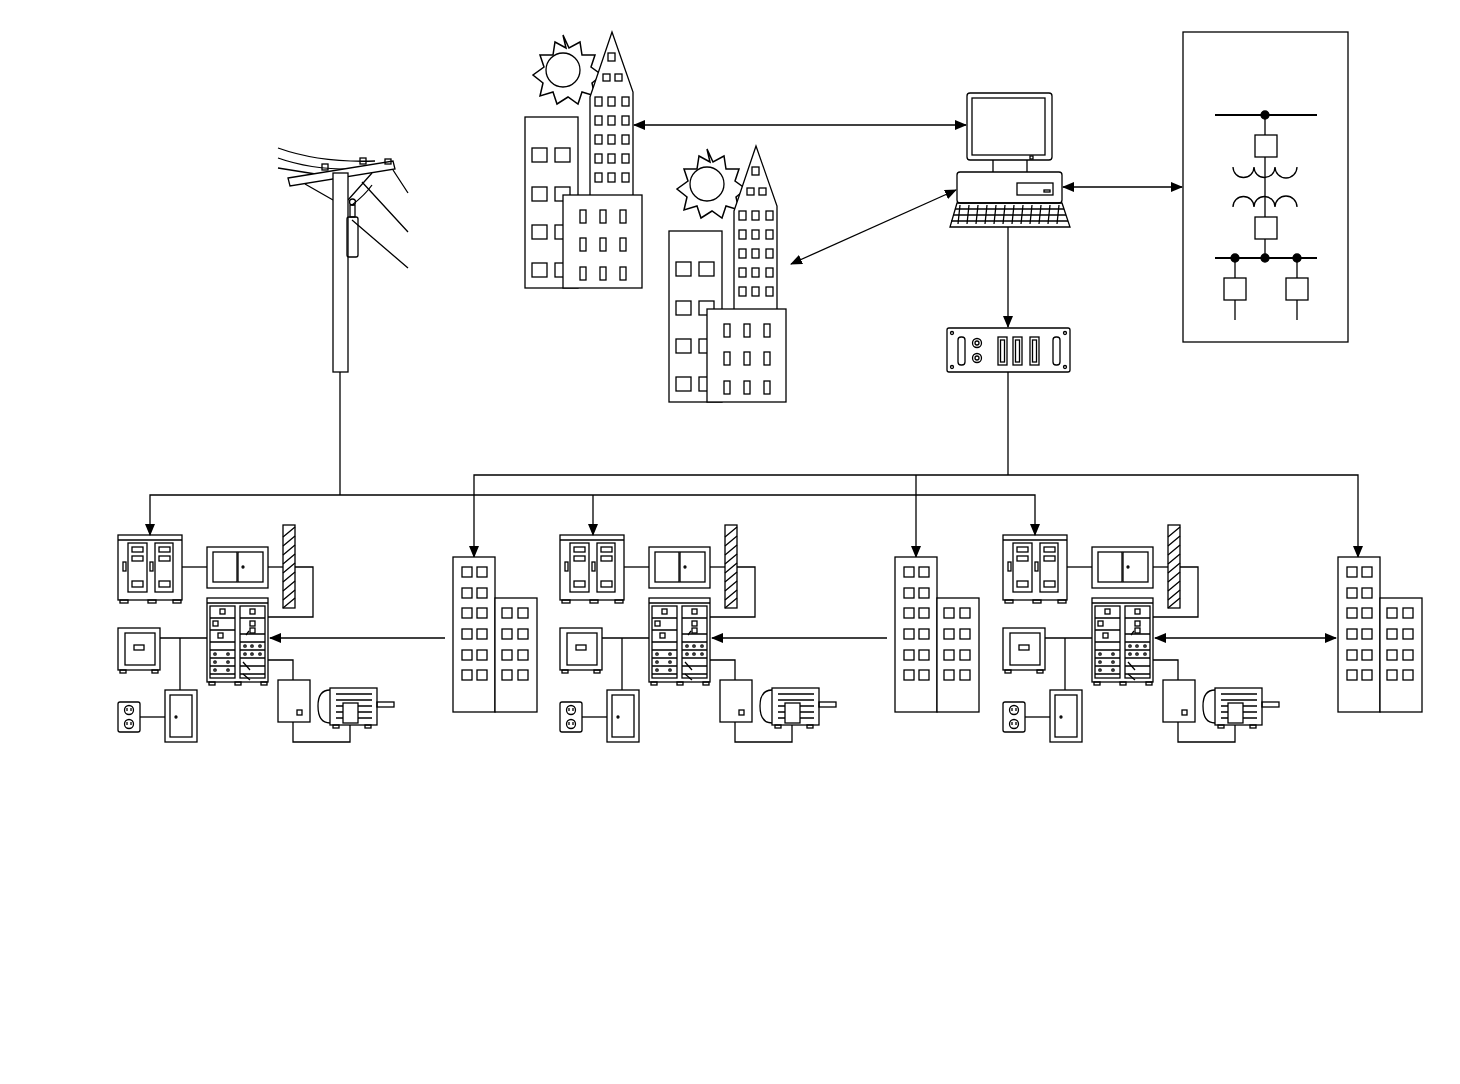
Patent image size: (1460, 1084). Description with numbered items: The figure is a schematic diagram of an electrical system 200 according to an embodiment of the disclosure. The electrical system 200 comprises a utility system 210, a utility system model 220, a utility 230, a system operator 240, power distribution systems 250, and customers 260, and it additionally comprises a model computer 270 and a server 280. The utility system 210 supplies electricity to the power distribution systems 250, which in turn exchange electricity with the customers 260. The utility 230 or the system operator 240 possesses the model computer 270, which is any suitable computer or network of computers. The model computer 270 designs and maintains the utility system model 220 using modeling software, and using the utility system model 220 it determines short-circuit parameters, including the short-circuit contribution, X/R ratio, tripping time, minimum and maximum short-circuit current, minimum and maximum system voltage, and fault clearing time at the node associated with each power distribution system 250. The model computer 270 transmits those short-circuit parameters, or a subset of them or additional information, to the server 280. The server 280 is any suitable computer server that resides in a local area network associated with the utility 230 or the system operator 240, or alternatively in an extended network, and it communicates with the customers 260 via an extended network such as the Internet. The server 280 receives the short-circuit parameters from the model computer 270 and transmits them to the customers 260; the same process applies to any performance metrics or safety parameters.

The electrical system 200 is at (228, 133).
The utility system 210 is at (332, 278).
The utility system model 220 is at (1351, 165).
The utility 230 is at (525, 203).
The system operator 240 is at (668, 313).
The power distribution systems 250 is at (217, 744).
The customers 260 is at (483, 712).
The model computer 270 is at (1052, 135).
The server 280 is at (1070, 350).